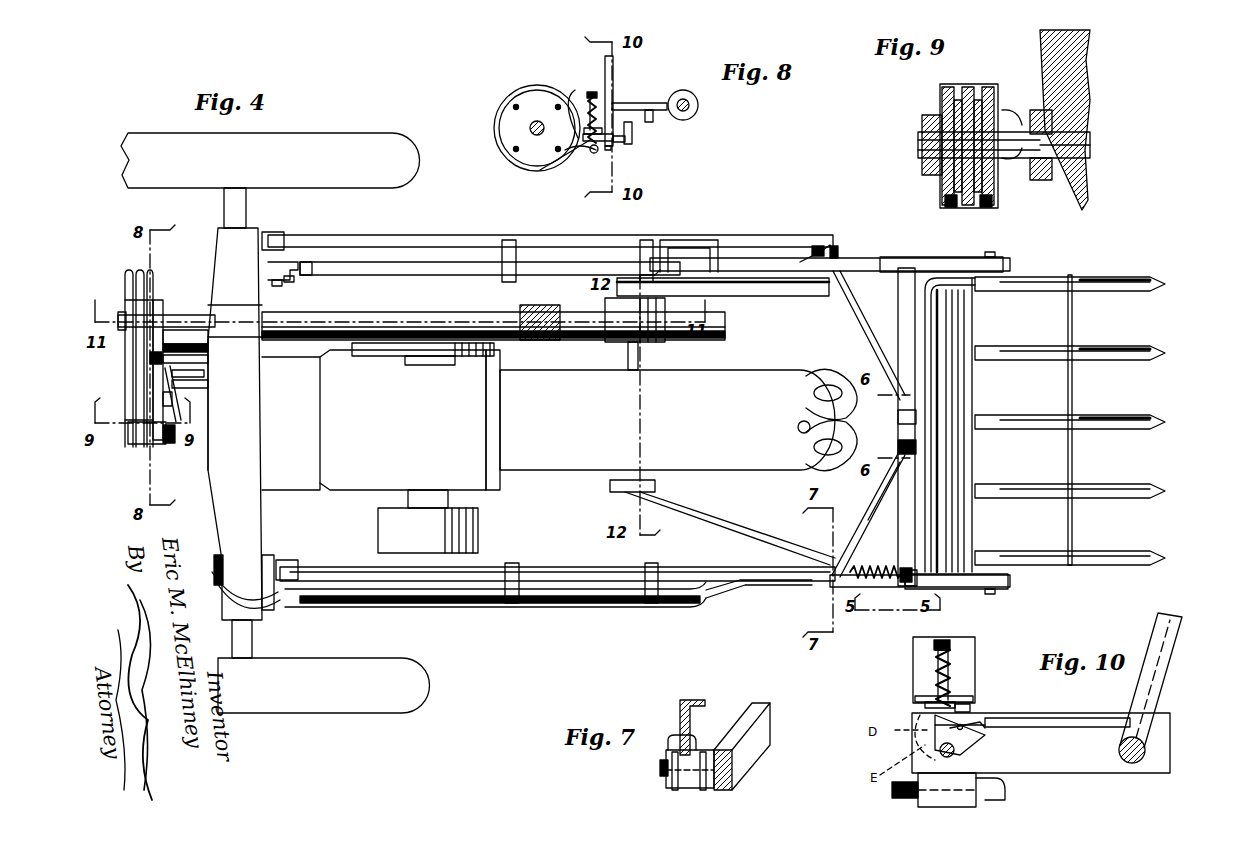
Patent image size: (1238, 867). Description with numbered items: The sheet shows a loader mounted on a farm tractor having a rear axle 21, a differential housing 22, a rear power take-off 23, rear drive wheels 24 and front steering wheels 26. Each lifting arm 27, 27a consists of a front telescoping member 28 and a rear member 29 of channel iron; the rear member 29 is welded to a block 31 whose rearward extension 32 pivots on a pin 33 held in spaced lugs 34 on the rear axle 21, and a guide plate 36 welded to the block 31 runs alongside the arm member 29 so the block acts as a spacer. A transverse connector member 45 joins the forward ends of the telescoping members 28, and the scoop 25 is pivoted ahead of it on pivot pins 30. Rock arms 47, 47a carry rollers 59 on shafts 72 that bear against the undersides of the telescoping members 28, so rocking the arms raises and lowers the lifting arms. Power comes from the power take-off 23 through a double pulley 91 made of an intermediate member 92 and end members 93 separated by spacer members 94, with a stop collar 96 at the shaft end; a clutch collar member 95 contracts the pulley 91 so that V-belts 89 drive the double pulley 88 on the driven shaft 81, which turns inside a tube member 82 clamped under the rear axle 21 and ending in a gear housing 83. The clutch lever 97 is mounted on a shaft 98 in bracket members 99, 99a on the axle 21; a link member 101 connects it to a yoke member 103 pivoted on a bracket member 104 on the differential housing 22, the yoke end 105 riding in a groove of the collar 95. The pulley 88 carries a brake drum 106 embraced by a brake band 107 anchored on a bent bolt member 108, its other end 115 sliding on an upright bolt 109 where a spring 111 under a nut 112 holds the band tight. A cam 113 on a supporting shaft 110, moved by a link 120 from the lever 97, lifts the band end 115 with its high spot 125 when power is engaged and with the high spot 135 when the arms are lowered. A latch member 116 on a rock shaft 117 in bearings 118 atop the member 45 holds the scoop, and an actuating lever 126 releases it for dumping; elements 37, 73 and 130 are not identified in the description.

In FIG. 4, the rear axle 21 is at (258, 530).
In FIG. 4, the differential housing 22 is at (207, 478).
In FIG. 9, the differential housing 22 is at (1055, 50).
In FIG. 4, the rear power take-off 23 is at (150, 440).
In FIG. 9, the rear power take-off 23 is at (1085, 150).
In FIG. 4, the rear drive wheels 24 is at (372, 148).
In FIG. 4, the scoop 25 is at (1060, 385).
In FIG. 4, the front steering wheels 26 is at (850, 400).
In FIG. 4, the lifting arm 27 is at (700, 570).
In FIG. 4, the lifting arm 27a is at (535, 278).
In FIG. 4, the front telescoping member 28 is at (860, 268).
In FIG. 7, the front telescoping member 28 is at (698, 700).
In FIG. 4, the rear member 29 is at (450, 252).
In FIG. 4, the pivot pins 30 is at (990, 252).
In FIG. 4, the block 31 is at (312, 277).
In FIG. 4, the rearward extension 32 is at (262, 268).
In FIG. 4, the pin 33 is at (280, 286).
In FIG. 4, the spaced lugs 34 is at (292, 282).
In FIG. 4, the guide plate 36 is at (395, 278).
In FIG. 4, the clamp 37 is at (510, 240).
In FIG. 4, the transverse connector member 45 is at (906, 268).
In FIG. 4, the rock arm 47 is at (735, 528).
In FIG. 7, the rock arm 47 is at (762, 735).
In FIG. 4, the rock arm 47a is at (780, 296).
In FIG. 4, the rollers 59 is at (836, 245).
In FIG. 7, the rollers 59 is at (695, 790).
In FIG. 7, the shafts 72 is at (660, 768).
In FIG. 4, the U-bolt 73 is at (806, 244).
In FIG. 7, the U-bolt 73 is at (680, 735).
In FIG. 4, the driven shaft 81 is at (540, 340).
In FIG. 8, the driven shaft 81 is at (535, 136).
In FIG. 4, the casing or tube member 82 is at (455, 312).
In FIG. 4, the gear housing 83 is at (665, 340).
In FIG. 4, the double pulley 88 is at (125, 280).
In FIG. 9, the V-belts 89 is at (985, 205).
In FIG. 4, the double pulley 91 is at (145, 444).
In FIG. 9, the double pulley 91 is at (996, 90).
In FIG. 9, the intermediate member 92 is at (968, 87).
In FIG. 9, the end members 93 is at (945, 90).
In FIG. 9, the spacer members 94 is at (954, 108).
In FIG. 4, the collar member 95 is at (170, 443).
In FIG. 9, the collar member 95 is at (1045, 110).
In FIG. 9, the stop collar 96 is at (922, 168).
In FIG. 4, the clutch lever 97 is at (201, 360).
In FIG. 8, the clutch lever 97 is at (614, 68).
In FIG. 10, the clutch lever 97 is at (1176, 660).
In FIG. 4, the shaft 98 is at (200, 350).
In FIG. 8, the shaft 98 is at (625, 139).
In FIG. 10, the shaft 98 is at (1146, 755).
In FIG. 4, the bracket member 99 is at (190, 344).
In FIG. 8, the bracket member 99 is at (600, 141).
In FIG. 10, the bracket member 99 is at (1165, 738).
In FIG. 4, the bracket member 99a is at (200, 388).
In FIG. 8, the bracket member 99a is at (632, 140).
In FIG. 4, the link member 101 is at (204, 374).
In FIG. 8, the link member 101 is at (653, 118).
In FIG. 4, the yoke member 103 is at (168, 385).
In FIG. 8, the yoke member 103 is at (640, 103).
In FIG. 9, the yoke member 103 is at (1025, 128).
In FIG. 4, the bracket member 104 is at (163, 396).
In FIG. 8, the bracket member 104 is at (690, 106).
In FIG. 8, the yoke end 105 is at (680, 90).
In FIG. 8, the brake drum 106 is at (520, 96).
In FIG. 8, the brake band 107 is at (495, 118).
In FIG. 10, the brake band 107 is at (975, 660).
In FIG. 8, the bent bolt member 108 is at (584, 150).
In FIG. 10, the bent bolt member 108 is at (1000, 800).
In FIG. 8, the upright bolt 109 is at (592, 95).
In FIG. 10, the upright bolt 109 is at (934, 672).
In FIG. 4, the supporting shaft 110 is at (150, 358).
In FIG. 8, the supporting shaft 110 is at (598, 150).
In FIG. 10, the supporting shaft 110 is at (954, 752).
In FIG. 8, the spring 111 is at (588, 108).
In FIG. 10, the spring 111 is at (936, 660).
In FIG. 8, the nut 112 is at (590, 92).
In FIG. 10, the nut 112 is at (950, 645).
In FIG. 8, the cam 113 is at (608, 150).
In FIG. 10, the cam 113 is at (935, 735).
In FIG. 8, the brake band end 115 is at (593, 128).
In FIG. 10, the brake band end 115 is at (965, 698).
In FIG. 4, the latch member 116 is at (895, 412).
In FIG. 4, the rock shaft 117 is at (870, 500).
In FIG. 4, the bearings 118 is at (895, 452).
In FIG. 4, the link 120 is at (160, 300).
In FIG. 10, the link 120 is at (1080, 727).
In FIG. 10, the high spot 125 is at (930, 702).
In FIG. 4, the actuating lever 126 is at (222, 600).
In FIG. 10, the stop 130 is at (968, 706).
In FIG. 10, the cam high spot 135 is at (985, 722).